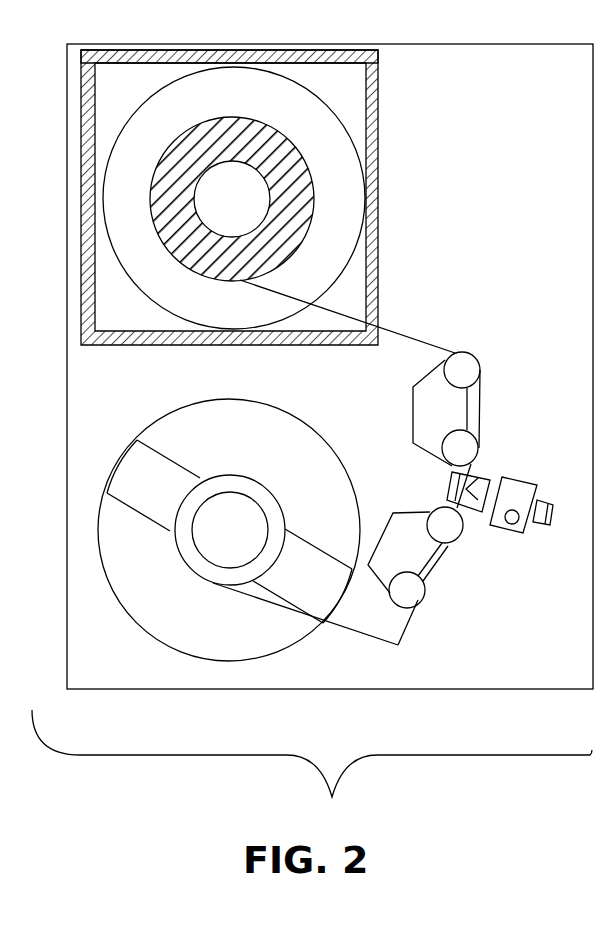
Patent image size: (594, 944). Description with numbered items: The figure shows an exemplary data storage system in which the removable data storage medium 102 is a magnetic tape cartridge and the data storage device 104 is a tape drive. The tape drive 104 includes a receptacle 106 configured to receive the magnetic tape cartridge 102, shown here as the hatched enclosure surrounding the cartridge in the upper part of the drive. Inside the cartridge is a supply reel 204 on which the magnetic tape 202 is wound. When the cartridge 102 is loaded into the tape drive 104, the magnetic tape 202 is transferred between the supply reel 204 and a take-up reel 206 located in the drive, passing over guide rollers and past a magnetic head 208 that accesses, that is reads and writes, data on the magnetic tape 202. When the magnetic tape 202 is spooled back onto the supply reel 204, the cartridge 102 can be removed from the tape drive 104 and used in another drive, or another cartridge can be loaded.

The removable data storage medium 102 is at (380, 220).
The data storage device 104 is at (530, 658).
The receptacle 106 is at (380, 95).
The magnetic tape 202 is at (374, 327).
The supply reel 204 is at (357, 160).
The take-up reel 206 is at (218, 400).
The magnetic head 208 is at (483, 478).